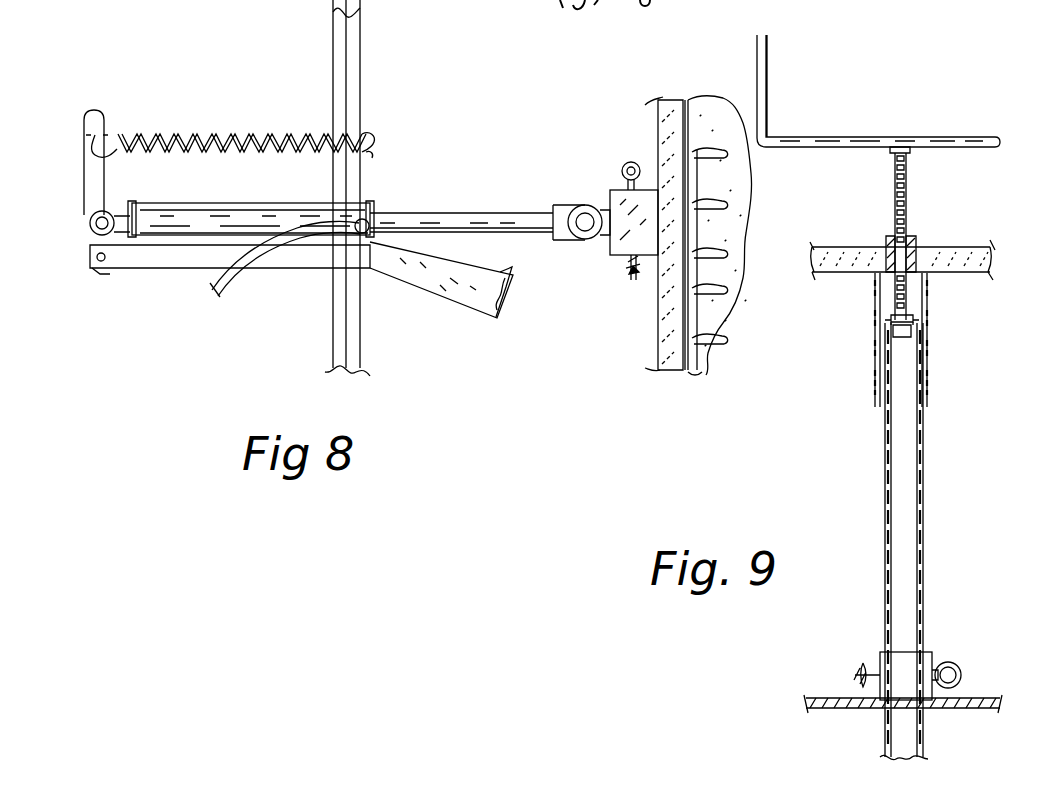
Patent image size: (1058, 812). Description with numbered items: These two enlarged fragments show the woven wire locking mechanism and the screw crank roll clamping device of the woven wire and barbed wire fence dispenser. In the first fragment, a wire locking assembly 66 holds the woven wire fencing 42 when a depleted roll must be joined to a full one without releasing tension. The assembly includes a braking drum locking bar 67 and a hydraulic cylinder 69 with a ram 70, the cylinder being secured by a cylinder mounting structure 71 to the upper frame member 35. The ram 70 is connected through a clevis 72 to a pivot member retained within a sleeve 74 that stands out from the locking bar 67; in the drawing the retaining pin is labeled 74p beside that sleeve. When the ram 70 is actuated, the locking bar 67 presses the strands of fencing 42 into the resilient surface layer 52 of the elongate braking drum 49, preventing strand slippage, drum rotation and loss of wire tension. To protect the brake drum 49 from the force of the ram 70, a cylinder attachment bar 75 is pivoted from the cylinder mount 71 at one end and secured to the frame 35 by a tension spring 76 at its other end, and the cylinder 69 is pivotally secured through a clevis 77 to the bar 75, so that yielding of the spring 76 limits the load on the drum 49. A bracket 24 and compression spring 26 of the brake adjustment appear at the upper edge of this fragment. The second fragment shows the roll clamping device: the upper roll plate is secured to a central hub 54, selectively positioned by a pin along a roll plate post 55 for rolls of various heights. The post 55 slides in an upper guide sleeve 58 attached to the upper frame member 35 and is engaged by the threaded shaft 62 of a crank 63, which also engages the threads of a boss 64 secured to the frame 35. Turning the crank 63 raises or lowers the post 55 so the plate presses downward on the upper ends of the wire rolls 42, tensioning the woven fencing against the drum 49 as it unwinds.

In FIG. 8, the bracket 24 is at (288, 0).
In FIG. 8, the compression spring 26 is at (238, 10).
In FIG. 8, the upper frame member 35 is at (362, 53).
In FIG. 9, the upper frame member 35 is at (947, 256).
In FIG. 8, the woven wire fencing 42 is at (710, 371).
In FIG. 8, the braking drum 49 is at (724, 319).
In FIG. 8, the resilient surface layer 52 is at (728, 234).
In FIG. 9, the central hub 54 is at (928, 661).
In FIG. 9, the roll plate post 55 is at (884, 466).
In FIG. 9, the upper guide sleeve 58 is at (918, 356).
In FIG. 9, the threaded shaft 62 is at (894, 172).
In FIG. 9, the crank 63 is at (801, 136).
In FIG. 9, the threaded boss 64 is at (911, 237).
In FIG. 8, the wire locking assembly 66 is at (460, 144).
In FIG. 8, the braking drum locking bar 67 is at (667, 111).
In FIG. 8, the hydraulic cylinder 69 is at (253, 218).
In FIG. 8, the ram 70 is at (490, 202).
In FIG. 8, the cylinder mounting structure 71 is at (192, 278).
In FIG. 8, the clevis 72 is at (578, 202).
In FIG. 8, the sleeve 74 is at (630, 258).
In FIG. 8, the eye bolt 74p is at (631, 171).
In FIG. 8, the cylinder attachment bar 75 is at (89, 223).
In FIG. 8, the tension spring 76 is at (247, 134).
In FIG. 8, the clevis 77 is at (113, 200).